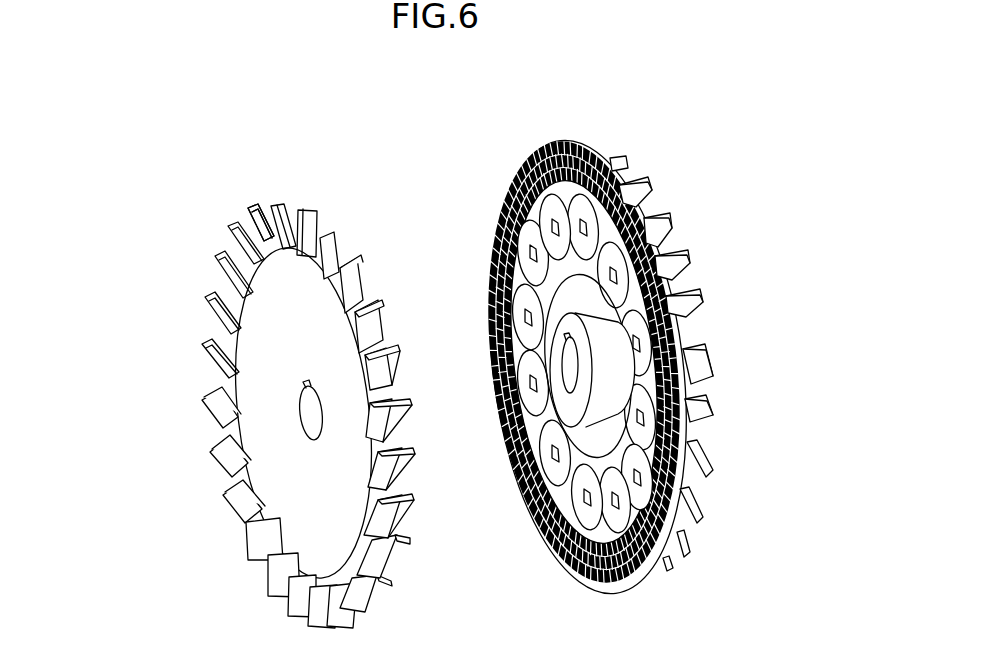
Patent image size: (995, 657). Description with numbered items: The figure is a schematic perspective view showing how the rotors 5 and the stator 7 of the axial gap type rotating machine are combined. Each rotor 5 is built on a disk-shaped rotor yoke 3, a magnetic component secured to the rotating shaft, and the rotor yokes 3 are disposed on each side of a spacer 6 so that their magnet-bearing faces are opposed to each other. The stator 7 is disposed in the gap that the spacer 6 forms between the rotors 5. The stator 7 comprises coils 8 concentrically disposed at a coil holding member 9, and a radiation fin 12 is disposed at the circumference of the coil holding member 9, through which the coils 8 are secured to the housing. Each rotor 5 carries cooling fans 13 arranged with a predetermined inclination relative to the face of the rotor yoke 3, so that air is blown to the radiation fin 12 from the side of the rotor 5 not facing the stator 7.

The rotor yoke 3 is at (323, 292).
The rotor 5 is at (216, 203).
The cooling fan 13 is at (262, 225).
The stator 7 is at (599, 331).
The coil 8 is at (580, 150).
The radiation fin 12 is at (555, 142).
The coil holding member 9 is at (652, 381).
The spacer 6 is at (600, 350).